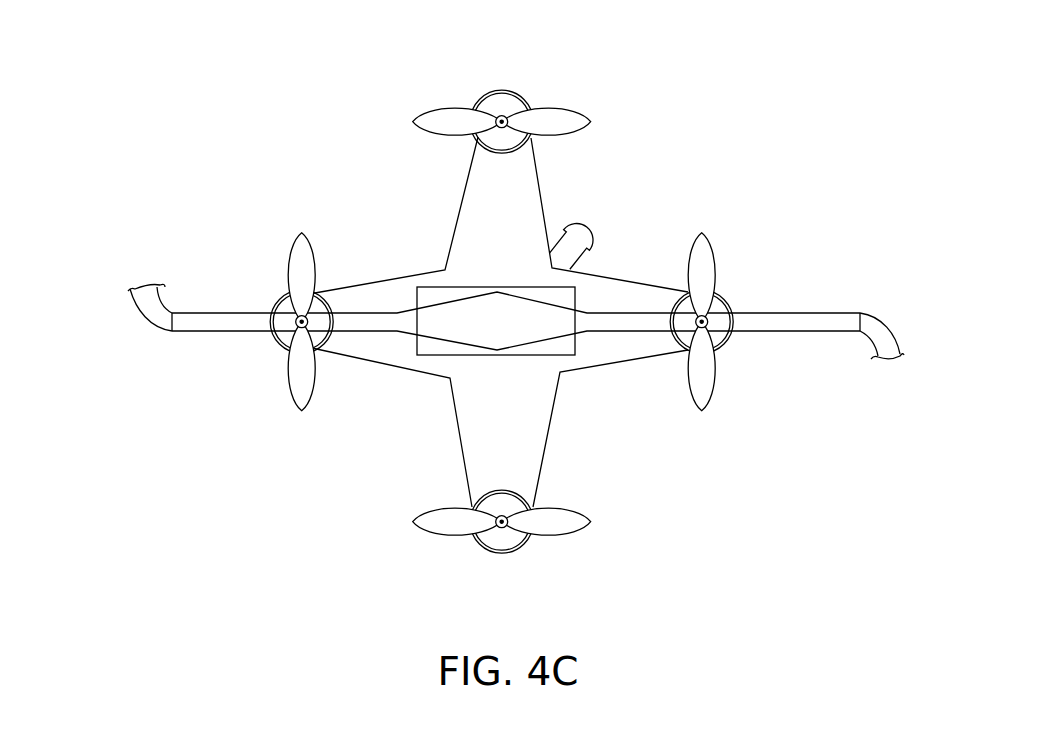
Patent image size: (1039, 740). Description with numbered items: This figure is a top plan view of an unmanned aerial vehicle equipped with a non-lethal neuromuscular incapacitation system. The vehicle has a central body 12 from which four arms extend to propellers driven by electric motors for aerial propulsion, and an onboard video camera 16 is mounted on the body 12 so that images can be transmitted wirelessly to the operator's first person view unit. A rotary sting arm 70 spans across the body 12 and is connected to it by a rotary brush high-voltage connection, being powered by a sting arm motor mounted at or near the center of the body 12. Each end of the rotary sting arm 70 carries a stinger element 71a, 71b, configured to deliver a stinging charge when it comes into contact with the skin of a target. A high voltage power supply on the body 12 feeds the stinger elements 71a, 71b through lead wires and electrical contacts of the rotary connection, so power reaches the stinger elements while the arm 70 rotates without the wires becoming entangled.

The body 12 is at (432, 420).
The onboard video camera 16 is at (595, 223).
The rotary sting arm 70 is at (803, 312).
The stinger element 71a is at (153, 331).
The stinger element 71b is at (884, 336).